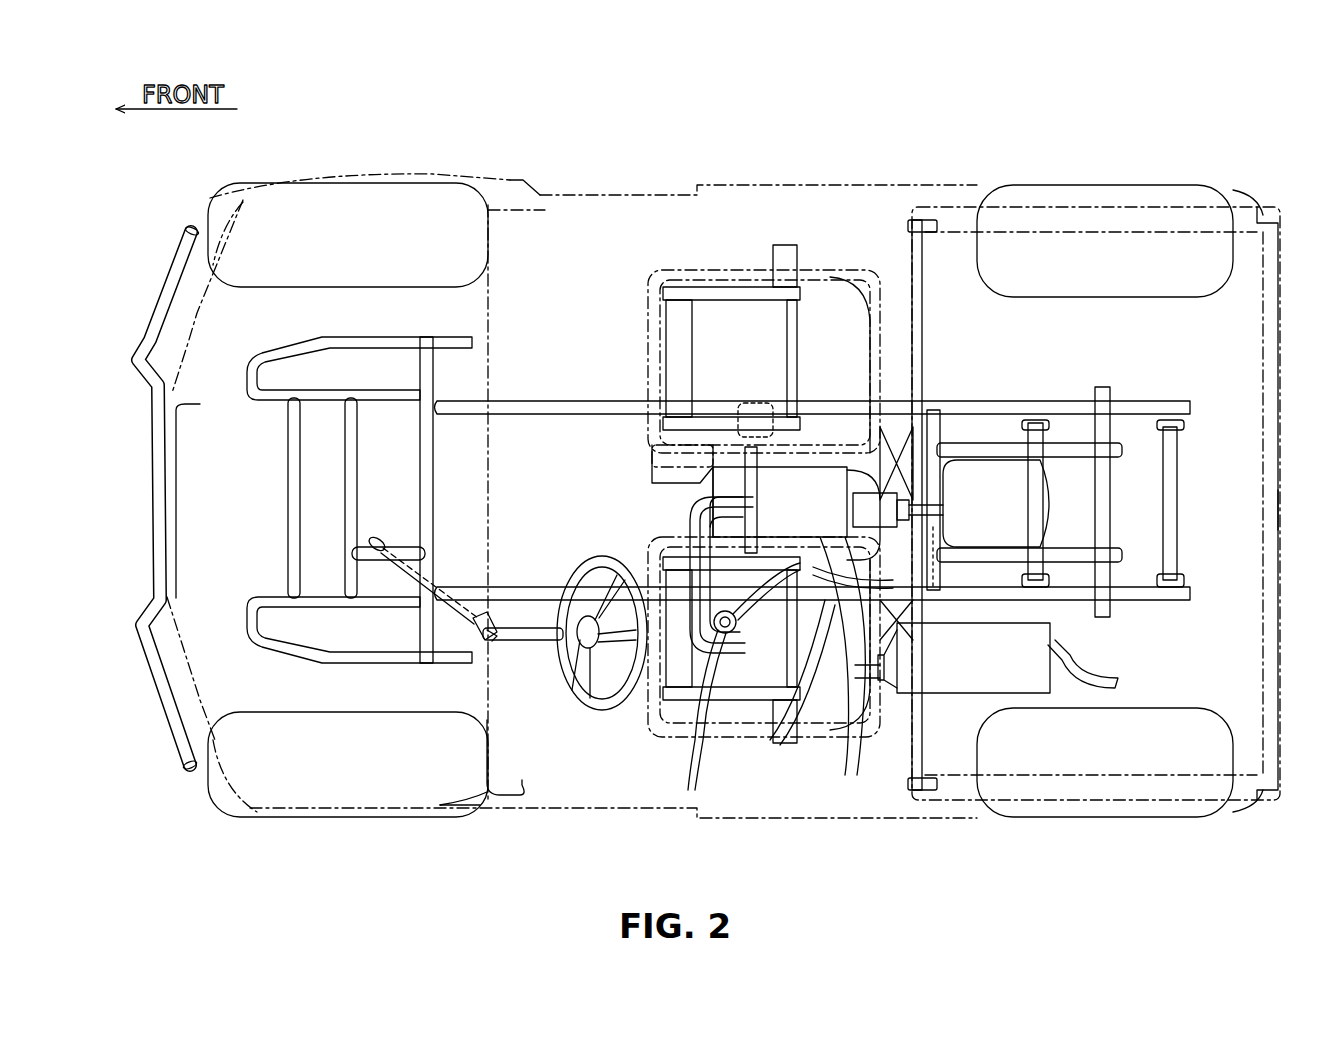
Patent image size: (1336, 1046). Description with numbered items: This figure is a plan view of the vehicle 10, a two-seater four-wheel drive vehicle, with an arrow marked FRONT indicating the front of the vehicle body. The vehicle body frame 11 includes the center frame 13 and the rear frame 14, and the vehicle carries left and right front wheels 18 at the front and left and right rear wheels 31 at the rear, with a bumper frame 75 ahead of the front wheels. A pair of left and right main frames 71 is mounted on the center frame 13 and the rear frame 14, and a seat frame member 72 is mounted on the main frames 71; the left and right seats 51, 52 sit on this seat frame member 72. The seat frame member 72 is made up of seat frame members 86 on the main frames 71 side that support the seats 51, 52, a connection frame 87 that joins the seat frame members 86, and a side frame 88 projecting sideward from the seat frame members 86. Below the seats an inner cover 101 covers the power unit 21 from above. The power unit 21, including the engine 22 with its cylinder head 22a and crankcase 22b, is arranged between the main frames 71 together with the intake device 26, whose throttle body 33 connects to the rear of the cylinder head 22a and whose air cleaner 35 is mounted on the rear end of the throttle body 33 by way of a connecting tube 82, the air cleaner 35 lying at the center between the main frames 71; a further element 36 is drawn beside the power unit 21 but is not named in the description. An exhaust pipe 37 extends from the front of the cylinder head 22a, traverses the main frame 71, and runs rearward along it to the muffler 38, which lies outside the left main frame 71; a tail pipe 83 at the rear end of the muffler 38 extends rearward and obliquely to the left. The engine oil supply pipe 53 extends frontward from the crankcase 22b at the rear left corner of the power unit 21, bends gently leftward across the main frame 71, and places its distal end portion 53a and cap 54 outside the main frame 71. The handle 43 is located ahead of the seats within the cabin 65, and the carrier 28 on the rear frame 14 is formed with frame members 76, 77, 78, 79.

The vehicle 10 is at (390, 155).
The vehicle body frame 11 is at (540, 393).
The center frame 13 is at (595, 393).
The rear frame 14 is at (1055, 393).
The front wheel 18 is at (213, 198).
The power unit 21 is at (711, 490).
The engine 22 is at (823, 443).
The cylinder head 22a is at (905, 470).
The crankcase 22b is at (892, 700).
The intake device 26 is at (1062, 500).
The carrier 28 is at (1283, 343).
The rear wheel 31 is at (1240, 188).
The throttle body 33 is at (933, 497).
The air cleaner 35 is at (1048, 518).
The engine mount bracket 36 is at (652, 468).
The exhaust pipe 37 is at (697, 530).
The muffler 38 is at (1040, 645).
The handle 43 is at (597, 707).
The seat 51 is at (725, 740).
The seat 52 is at (708, 270).
The engine oil supply pipe 53 is at (845, 740).
The distal end portion 53a is at (770, 742).
The cap 54 is at (700, 742).
The cabin 65 is at (510, 765).
The main frame 71 is at (613, 407).
The seat frame member 72 is at (730, 280).
The bumper frame 75 is at (150, 372).
The frame member 76 is at (910, 283).
The frame member 77 is at (1015, 207).
The frame member 78 is at (965, 800).
The frame member 79 is at (1282, 488).
The connecting tube 82 is at (933, 527).
The tail pipe 83 is at (1120, 685).
The seat frame member 86 is at (800, 333).
The connection frame 87 is at (776, 420).
The side frame 88 is at (786, 250).
The inner cover 101 is at (665, 722).